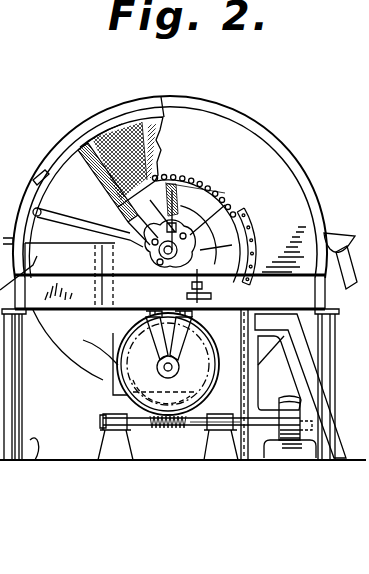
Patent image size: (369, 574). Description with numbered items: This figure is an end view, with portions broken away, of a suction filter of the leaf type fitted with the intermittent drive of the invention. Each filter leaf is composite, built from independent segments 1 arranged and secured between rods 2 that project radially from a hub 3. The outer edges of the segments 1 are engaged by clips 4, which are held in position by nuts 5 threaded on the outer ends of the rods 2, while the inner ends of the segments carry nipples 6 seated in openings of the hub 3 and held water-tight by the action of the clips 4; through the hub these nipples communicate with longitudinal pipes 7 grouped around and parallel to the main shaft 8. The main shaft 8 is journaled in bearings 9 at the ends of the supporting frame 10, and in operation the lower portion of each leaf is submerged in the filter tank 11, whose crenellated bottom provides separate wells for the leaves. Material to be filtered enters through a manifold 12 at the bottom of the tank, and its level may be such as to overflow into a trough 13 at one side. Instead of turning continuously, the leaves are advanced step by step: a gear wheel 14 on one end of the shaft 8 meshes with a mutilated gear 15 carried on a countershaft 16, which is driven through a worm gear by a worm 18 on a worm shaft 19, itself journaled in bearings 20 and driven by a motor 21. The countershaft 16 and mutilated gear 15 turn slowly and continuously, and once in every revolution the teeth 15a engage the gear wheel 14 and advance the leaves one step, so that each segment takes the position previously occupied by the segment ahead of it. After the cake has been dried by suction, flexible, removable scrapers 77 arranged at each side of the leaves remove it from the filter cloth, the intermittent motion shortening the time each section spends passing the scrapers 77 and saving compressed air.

The filter leaf segments 1 is at (112, 162).
The rods 2 is at (83, 168).
The hub 3 is at (150, 262).
The clips 4 is at (66, 151).
The nuts 5 is at (80, 147).
The nipples 6 is at (173, 188).
The longitudinal pipes 7 is at (195, 229).
The main shaft 8 is at (168, 262).
The bearings 9 is at (18, 273).
The supporting frame 10 is at (37, 460).
The filter tank 11 is at (56, 344).
The manifold 12 is at (122, 384).
The trough 13 is at (335, 233).
The gear wheel 14 is at (232, 204).
The mutilated gear 15 is at (134, 396).
The teeth 15a is at (90, 346).
The countershaft 16 is at (175, 362).
The worm 18 is at (200, 436).
The worm shaft 19 is at (200, 430).
The bearings 20 is at (101, 430).
The motor 21 is at (293, 447).
The scrapers 77 is at (82, 240).